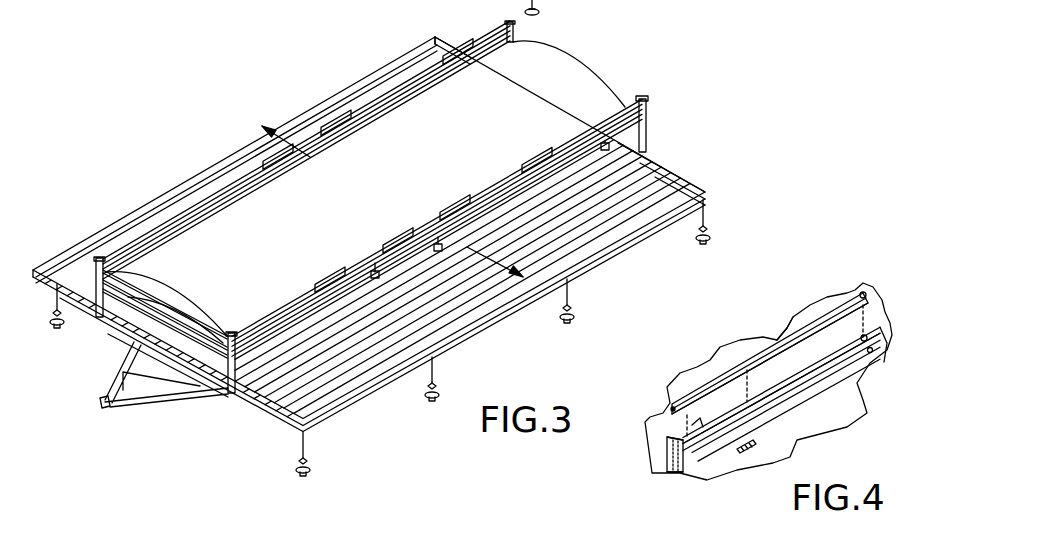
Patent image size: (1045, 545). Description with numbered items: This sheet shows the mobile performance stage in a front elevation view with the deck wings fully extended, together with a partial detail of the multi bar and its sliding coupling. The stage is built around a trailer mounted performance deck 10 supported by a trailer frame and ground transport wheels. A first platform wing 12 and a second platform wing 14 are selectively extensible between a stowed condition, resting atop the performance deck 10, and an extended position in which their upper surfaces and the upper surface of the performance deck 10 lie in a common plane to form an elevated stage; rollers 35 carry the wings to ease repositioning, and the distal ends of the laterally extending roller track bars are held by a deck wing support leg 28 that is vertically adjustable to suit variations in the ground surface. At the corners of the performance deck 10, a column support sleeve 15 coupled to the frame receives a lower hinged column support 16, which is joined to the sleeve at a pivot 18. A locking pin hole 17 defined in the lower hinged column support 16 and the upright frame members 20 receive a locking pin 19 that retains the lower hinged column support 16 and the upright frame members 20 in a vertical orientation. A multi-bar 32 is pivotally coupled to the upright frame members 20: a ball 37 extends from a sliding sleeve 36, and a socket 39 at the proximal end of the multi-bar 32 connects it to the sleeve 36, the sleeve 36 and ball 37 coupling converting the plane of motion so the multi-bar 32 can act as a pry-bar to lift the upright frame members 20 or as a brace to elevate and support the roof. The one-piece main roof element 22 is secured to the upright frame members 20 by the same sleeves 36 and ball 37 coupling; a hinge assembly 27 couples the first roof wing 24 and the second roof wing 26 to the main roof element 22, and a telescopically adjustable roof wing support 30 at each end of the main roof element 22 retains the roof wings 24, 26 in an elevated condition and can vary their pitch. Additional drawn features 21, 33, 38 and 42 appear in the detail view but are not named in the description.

In FIG. 3, the performance deck 10 is at (135, 332).
In FIG. 3, the first platform wing 12 is at (693, 180).
In FIG. 3, the second platform wing 14 is at (148, 208).
In FIG. 3, the column support sleeve 15 is at (228, 395).
In FIG. 3, the lower hinged column support 16 is at (648, 138).
In FIG. 4, the lower hinged column support 16 is at (667, 455).
In FIG. 4, the locking pin hole 17 is at (683, 438).
In FIG. 4, the pivot 18 is at (678, 465).
In FIG. 4, the locking pin 19 is at (710, 380).
In FIG. 3, the upright frame members 20 is at (397, 105).
In FIG. 4, the upright frame members 20 is at (833, 368).
In FIG. 4, the mounting bracket 21 is at (697, 478).
In FIG. 3, the main roof element 22 is at (573, 57).
In FIG. 4, the main roof element 22 is at (810, 312).
In FIG. 3, the first roof wing 24 is at (175, 317).
In FIG. 3, the second roof wing 26 is at (120, 272).
In FIG. 3, the hinge assembly 27 is at (603, 147).
In FIG. 3, the deck wing support leg 28 is at (432, 403).
In FIG. 3, the roof wing support 30 is at (650, 117).
In FIG. 3, the multi-bar 32 is at (457, 63).
In FIG. 4, the multi-bar 32 is at (773, 350).
In FIG. 4, the slot 33 is at (780, 407).
In FIG. 3, the rollers 35 is at (92, 313).
In FIG. 4, the sleeve 36 is at (871, 350).
In FIG. 4, the ball 37 is at (865, 337).
In FIG. 4, the channel flange 38 is at (873, 343).
In FIG. 3, the socket 39 is at (537, 165).
In FIG. 4, the socket 39 is at (863, 293).
In FIG. 4, the end pin 42 is at (672, 407).